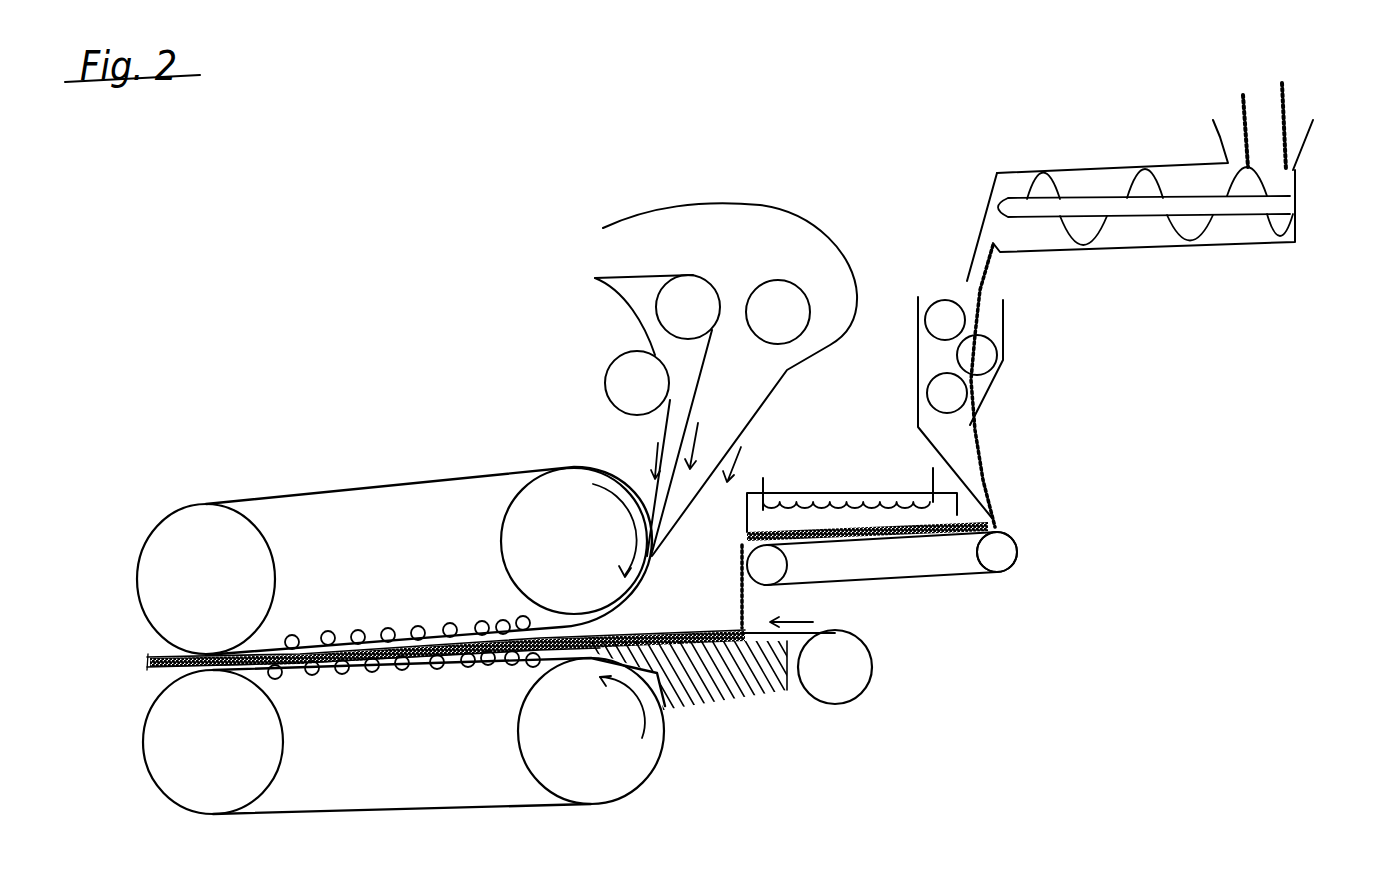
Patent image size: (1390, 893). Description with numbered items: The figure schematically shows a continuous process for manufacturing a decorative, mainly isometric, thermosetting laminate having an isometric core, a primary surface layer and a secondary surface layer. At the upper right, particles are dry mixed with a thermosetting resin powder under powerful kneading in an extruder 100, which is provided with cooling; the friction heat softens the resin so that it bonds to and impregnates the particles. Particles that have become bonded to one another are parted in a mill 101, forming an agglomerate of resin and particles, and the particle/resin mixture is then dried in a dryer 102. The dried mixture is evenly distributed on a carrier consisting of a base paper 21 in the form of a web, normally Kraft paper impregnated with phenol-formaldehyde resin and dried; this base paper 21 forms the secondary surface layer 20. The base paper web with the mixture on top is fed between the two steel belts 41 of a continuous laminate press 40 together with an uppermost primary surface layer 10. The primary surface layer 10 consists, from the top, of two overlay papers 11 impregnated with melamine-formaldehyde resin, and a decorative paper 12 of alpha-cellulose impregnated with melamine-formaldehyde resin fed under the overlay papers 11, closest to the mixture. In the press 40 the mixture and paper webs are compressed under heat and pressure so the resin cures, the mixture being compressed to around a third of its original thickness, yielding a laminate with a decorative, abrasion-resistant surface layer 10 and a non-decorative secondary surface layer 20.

The primary surface layer 10 is at (557, 211).
The overlay papers 11 is at (635, 413).
The decorative paper 12 is at (709, 379).
The secondary surface layer 20 is at (952, 597).
The base paper 21 is at (830, 631).
The continuous laminate press 40 is at (252, 456).
The steel belts 41 is at (382, 484).
The extruder 100 is at (1237, 233).
The mill 101 is at (1005, 360).
The dryer 102 is at (1003, 542).